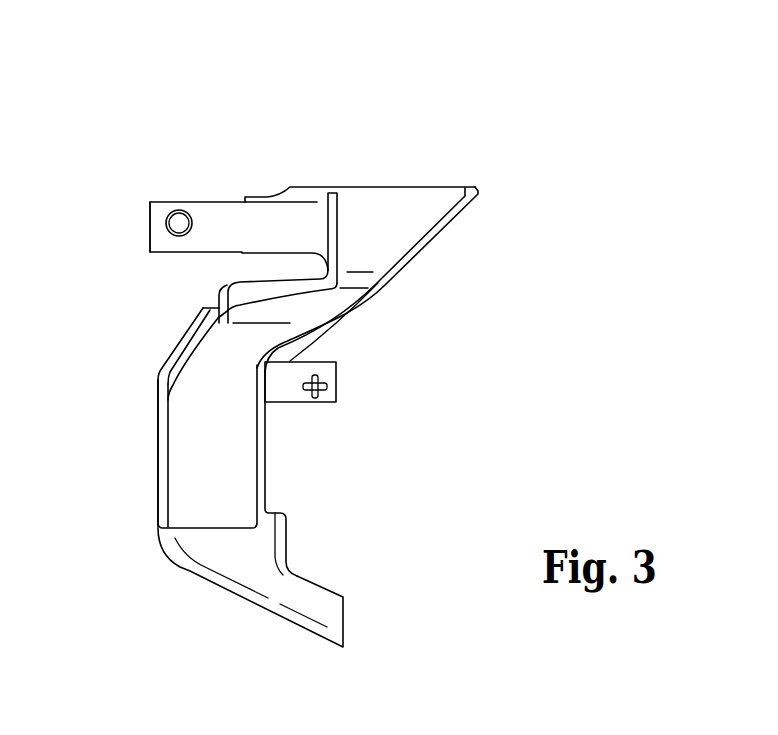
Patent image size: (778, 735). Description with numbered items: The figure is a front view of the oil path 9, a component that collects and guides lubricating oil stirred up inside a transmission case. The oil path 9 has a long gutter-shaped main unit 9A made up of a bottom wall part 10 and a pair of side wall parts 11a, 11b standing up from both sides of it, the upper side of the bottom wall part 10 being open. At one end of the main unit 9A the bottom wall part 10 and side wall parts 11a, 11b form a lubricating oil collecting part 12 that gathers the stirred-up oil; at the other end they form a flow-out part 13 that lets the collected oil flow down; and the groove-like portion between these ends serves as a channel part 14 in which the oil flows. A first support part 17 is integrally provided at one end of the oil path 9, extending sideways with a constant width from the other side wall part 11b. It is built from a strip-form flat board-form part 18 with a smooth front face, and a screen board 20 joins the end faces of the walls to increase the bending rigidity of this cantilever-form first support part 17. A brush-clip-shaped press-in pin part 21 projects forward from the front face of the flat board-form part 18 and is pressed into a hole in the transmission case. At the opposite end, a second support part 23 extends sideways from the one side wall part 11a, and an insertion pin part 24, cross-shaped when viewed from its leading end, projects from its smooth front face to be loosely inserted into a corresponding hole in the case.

The oil path 9 is at (444, 68).
The main unit 9A is at (153, 409).
The bottom wall part 10 is at (232, 480).
The side wall part 11a is at (260, 445).
The side wall part 11b is at (182, 342).
The lubricating oil collecting part 12 is at (446, 182).
The flow-out part 13 is at (325, 613).
The channel part 14 is at (184, 452).
The first support part 17 is at (166, 241).
The flat board-form part 18 is at (218, 213).
The screen board 20 is at (377, 202).
The press-in pin part 21 is at (170, 213).
The second support part 23 is at (330, 370).
The insertion pin part 24 is at (327, 387).